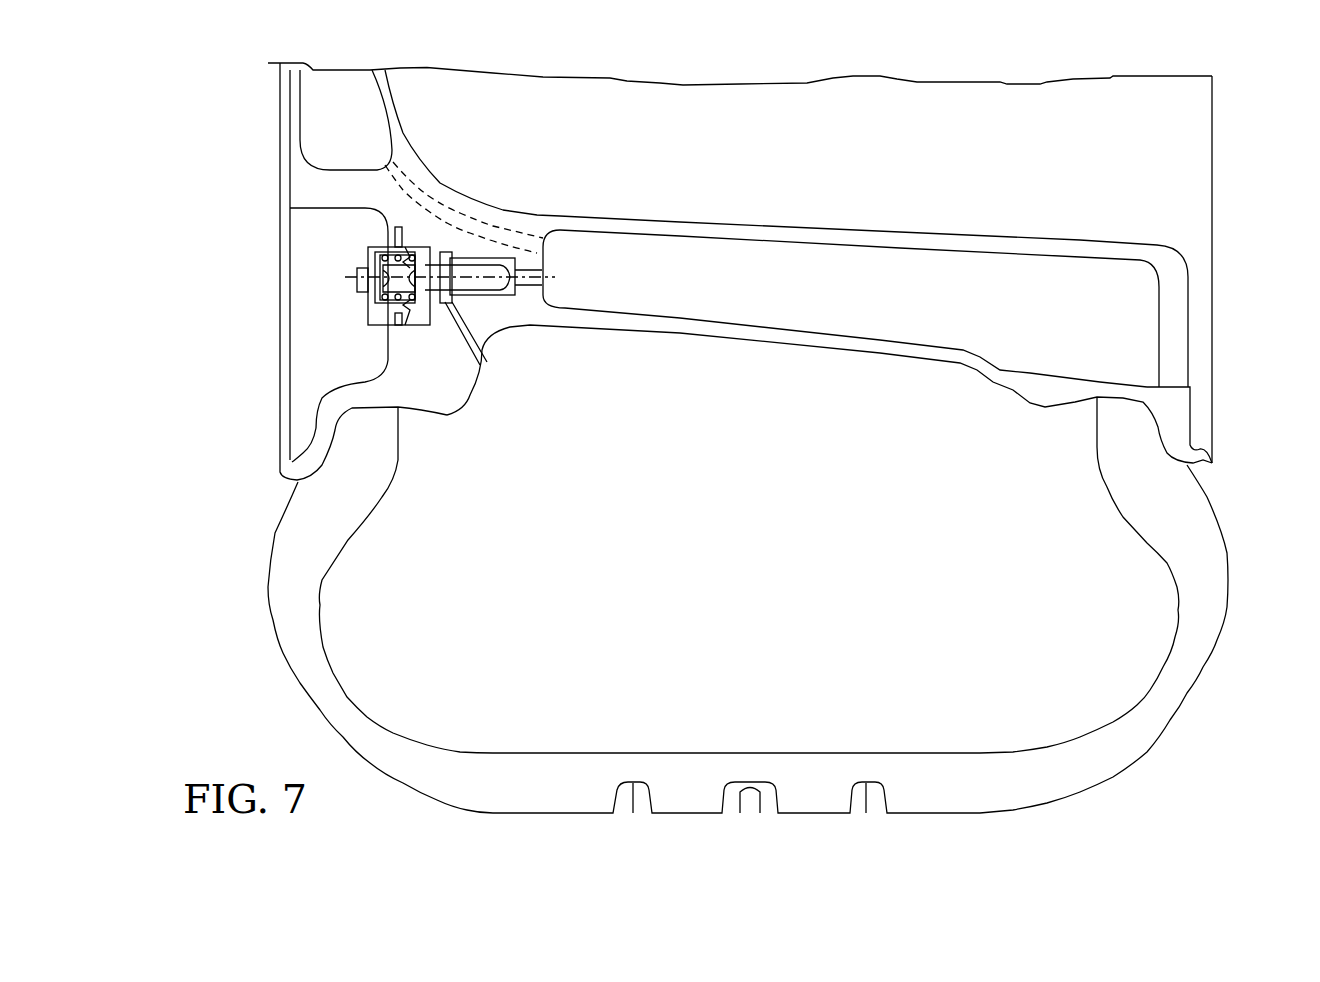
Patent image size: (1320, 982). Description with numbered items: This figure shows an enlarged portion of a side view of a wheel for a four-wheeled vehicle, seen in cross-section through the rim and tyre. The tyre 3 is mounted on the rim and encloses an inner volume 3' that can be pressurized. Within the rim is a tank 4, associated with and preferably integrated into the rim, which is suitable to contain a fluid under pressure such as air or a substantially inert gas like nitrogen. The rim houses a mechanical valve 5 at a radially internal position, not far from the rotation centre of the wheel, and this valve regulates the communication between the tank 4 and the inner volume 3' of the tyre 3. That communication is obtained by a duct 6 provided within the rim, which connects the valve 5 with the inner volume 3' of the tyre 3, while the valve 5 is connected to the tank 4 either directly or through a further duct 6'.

The tyre 3 is at (788, 639).
The inner volume 3' is at (702, 575).
The tank 4 is at (747, 270).
The mechanical valve 5 is at (370, 237).
The duct 6 is at (467, 412).
The further duct 6' is at (558, 372).